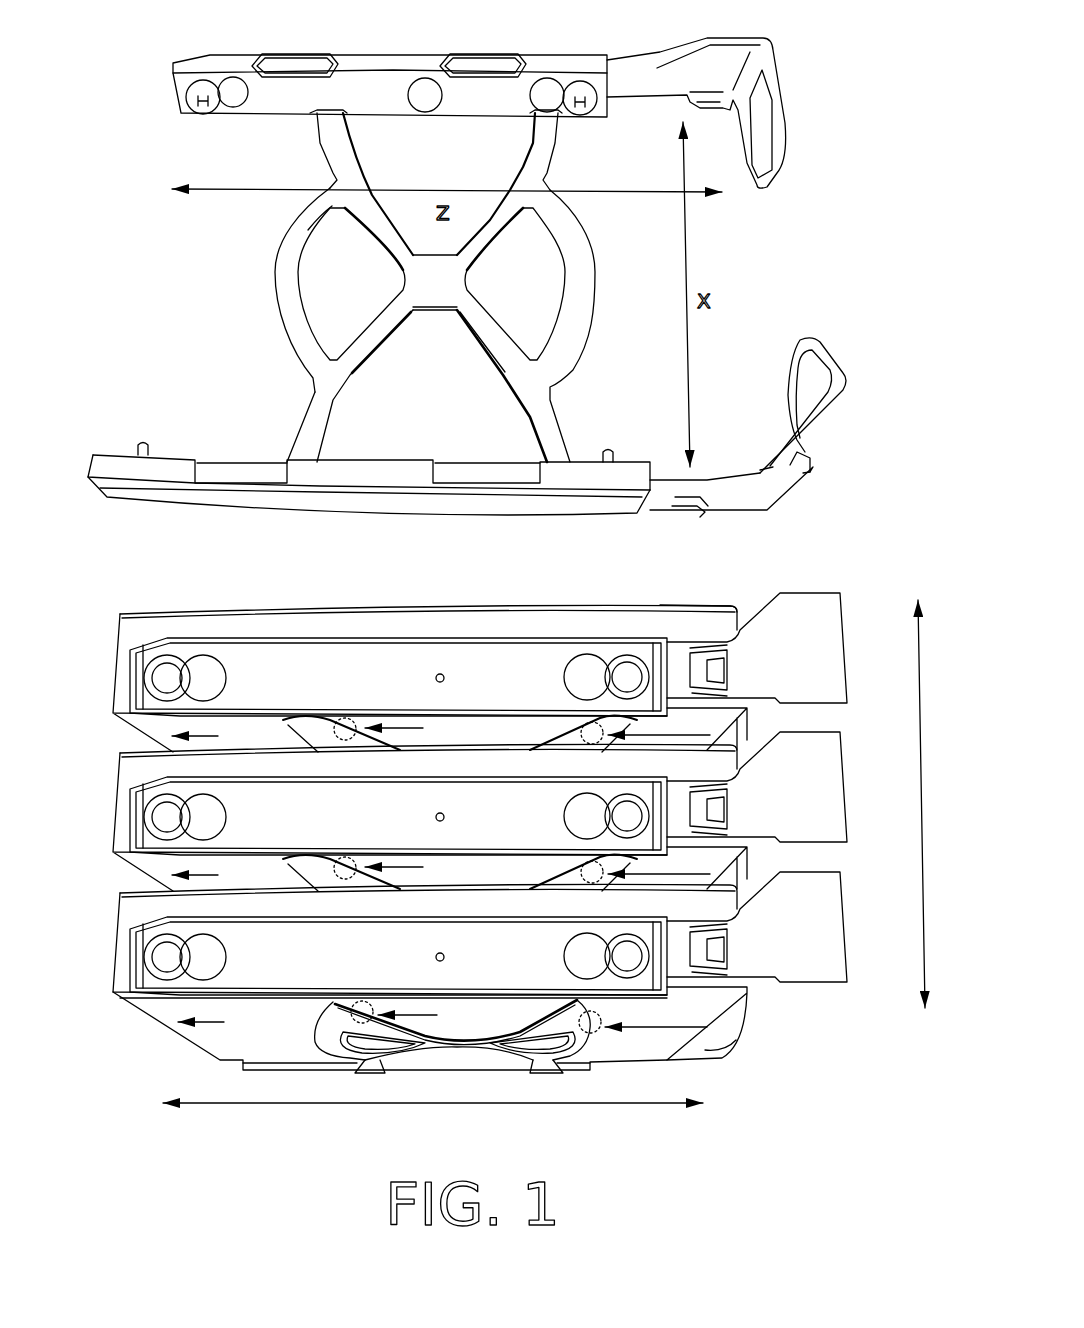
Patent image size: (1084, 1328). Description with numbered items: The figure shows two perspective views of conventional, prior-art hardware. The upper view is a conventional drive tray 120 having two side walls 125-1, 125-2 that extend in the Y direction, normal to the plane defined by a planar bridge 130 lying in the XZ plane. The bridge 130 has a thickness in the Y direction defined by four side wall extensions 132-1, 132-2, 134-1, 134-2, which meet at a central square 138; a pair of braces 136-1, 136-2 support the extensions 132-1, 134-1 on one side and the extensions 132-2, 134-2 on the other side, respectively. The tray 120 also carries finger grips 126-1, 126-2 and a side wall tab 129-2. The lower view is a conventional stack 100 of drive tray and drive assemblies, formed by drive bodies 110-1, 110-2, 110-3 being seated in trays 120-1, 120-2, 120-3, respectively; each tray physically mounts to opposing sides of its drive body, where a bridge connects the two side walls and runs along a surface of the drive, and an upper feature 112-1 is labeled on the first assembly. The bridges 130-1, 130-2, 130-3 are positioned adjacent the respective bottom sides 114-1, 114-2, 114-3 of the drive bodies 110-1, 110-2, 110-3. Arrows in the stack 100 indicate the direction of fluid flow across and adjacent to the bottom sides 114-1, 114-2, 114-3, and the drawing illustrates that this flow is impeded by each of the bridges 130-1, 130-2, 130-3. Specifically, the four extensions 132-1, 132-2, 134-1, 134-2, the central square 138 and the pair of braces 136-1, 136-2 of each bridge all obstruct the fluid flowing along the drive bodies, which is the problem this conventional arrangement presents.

The stack of drive tray and drive assemblies 100 is at (142, 570).
The drive body 110-1 is at (156, 607).
The drive body 110-2 is at (156, 746).
The drive body 110-3 is at (156, 886).
The upper tray connector 112-1 is at (718, 606).
The bottom side 114-1 is at (722, 720).
The bottom side 114-2 is at (720, 861).
The bottom side 114-3 is at (720, 1012).
The drive tray 120 is at (138, 74).
The tray 120-1 is at (822, 648).
The tray 120-2 is at (814, 787).
The tray 120-3 is at (817, 925).
The side wall 125-1 is at (362, 47).
The side wall 125-2 is at (332, 515).
The finger grip 126-1 is at (787, 150).
The finger grip 126-2 is at (827, 357).
The side wall tab 129-2 is at (690, 515).
The bridge 130 is at (250, 228).
The bridge 130-1 is at (330, 742).
The bridge 130-2 is at (330, 882).
The bridge 130-3 is at (333, 1026).
The side wall extension 132-1 is at (318, 150).
The side wall extension 132-2 is at (525, 150).
The side wall extension 134-1 is at (300, 418).
The side wall extension 134-2 is at (526, 416).
The brace 136-1 is at (275, 280).
The brace 136-2 is at (563, 272).
The central square 138 is at (452, 292).